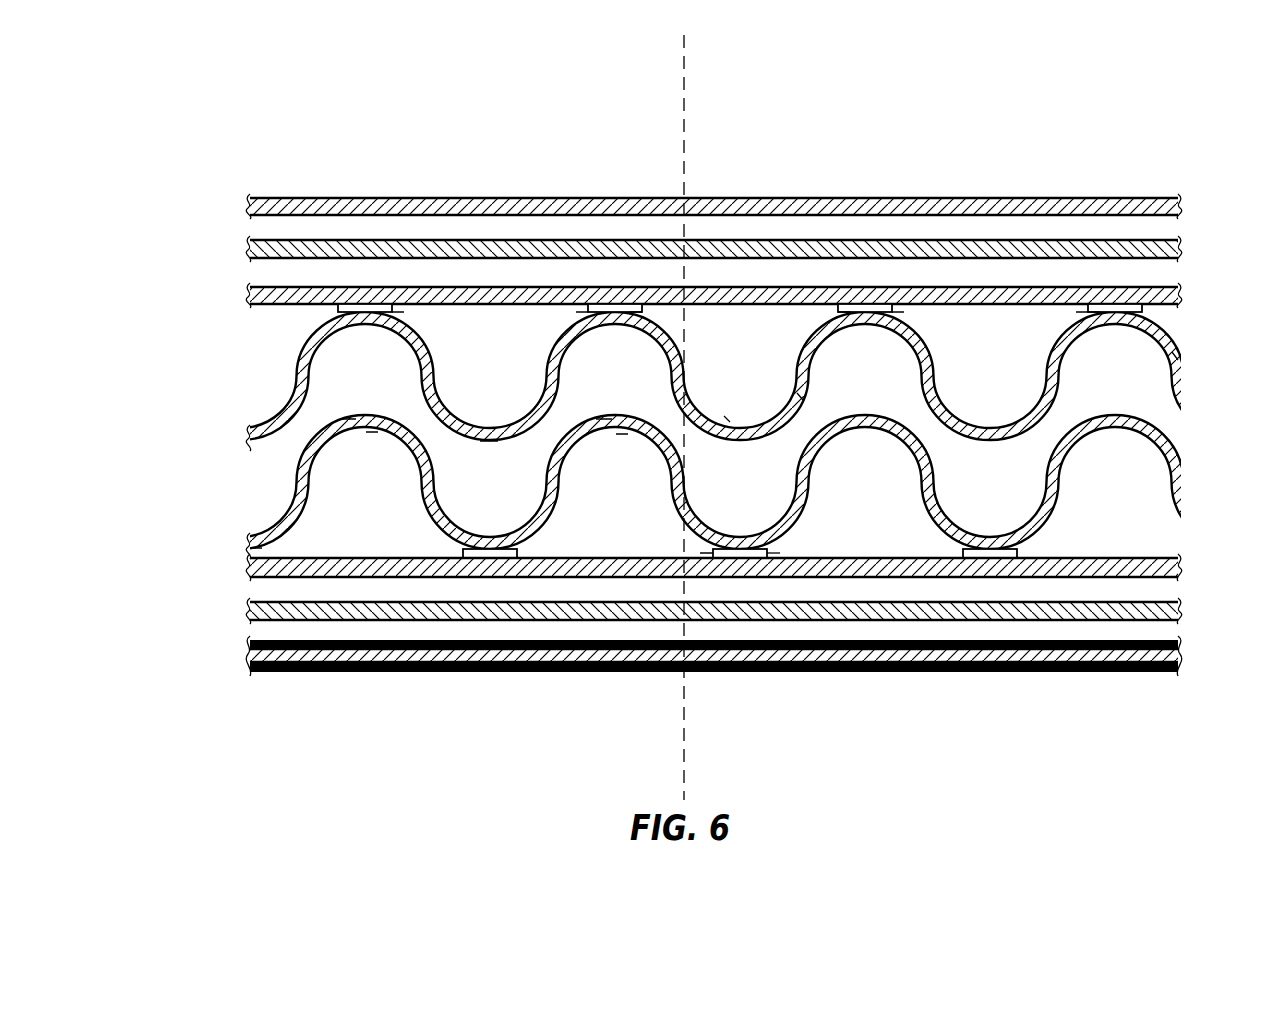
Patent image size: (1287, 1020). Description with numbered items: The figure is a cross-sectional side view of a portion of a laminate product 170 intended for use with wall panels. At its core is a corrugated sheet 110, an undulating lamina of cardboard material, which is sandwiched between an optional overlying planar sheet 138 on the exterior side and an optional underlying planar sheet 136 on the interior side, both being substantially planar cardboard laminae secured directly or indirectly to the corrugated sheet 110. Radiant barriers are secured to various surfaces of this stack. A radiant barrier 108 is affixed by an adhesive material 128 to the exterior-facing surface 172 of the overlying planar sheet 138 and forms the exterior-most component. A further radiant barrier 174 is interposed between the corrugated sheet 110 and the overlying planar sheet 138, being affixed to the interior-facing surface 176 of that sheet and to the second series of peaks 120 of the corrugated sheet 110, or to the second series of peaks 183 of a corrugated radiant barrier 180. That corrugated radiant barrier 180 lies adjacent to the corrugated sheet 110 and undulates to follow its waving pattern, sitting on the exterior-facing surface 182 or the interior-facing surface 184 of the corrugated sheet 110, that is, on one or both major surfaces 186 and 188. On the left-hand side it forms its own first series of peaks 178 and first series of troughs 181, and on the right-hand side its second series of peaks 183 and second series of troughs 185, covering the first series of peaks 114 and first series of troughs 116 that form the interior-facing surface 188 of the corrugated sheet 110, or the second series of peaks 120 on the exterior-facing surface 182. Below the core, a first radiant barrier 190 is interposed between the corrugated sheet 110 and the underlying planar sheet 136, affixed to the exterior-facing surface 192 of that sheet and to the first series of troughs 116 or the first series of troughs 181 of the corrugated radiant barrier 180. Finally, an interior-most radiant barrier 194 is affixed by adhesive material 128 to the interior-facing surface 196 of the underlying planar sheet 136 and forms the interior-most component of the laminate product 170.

The radiant barrier 108 is at (356, 205).
The corrugated sheet 110 is at (412, 318).
The first series of peaks 114 is at (489, 444).
The first series of troughs 116 is at (348, 420).
The second series of peaks 120 is at (580, 308).
The adhesive material 128 is at (836, 390).
The underlying planar sheet 136 is at (940, 615).
The overlying planar sheet 138 is at (670, 252).
The laminate product 170 is at (1092, 152).
The exterior-facing surface 172 is at (316, 230).
The radiant barrier 174 is at (520, 298).
The interior-facing surface 176 is at (997, 265).
The first series of peaks 178 is at (372, 432).
The corrugated radiant barrier 180 is at (250, 548).
The first series of troughs 181 is at (263, 561).
The exterior-facing surface 182 is at (650, 308).
The second series of peaks 183 is at (1087, 300).
The interior-facing surface 184 is at (723, 414).
The second series of troughs 185 is at (757, 533).
The major surface 186 is at (796, 391).
The interior-facing surface 188 is at (775, 556).
The first radiant barrier 190 is at (1028, 565).
The exterior-facing surface 192 is at (1112, 590).
The interior-most radiant barrier 194 is at (1128, 672).
The interior-facing surface 196 is at (1061, 630).